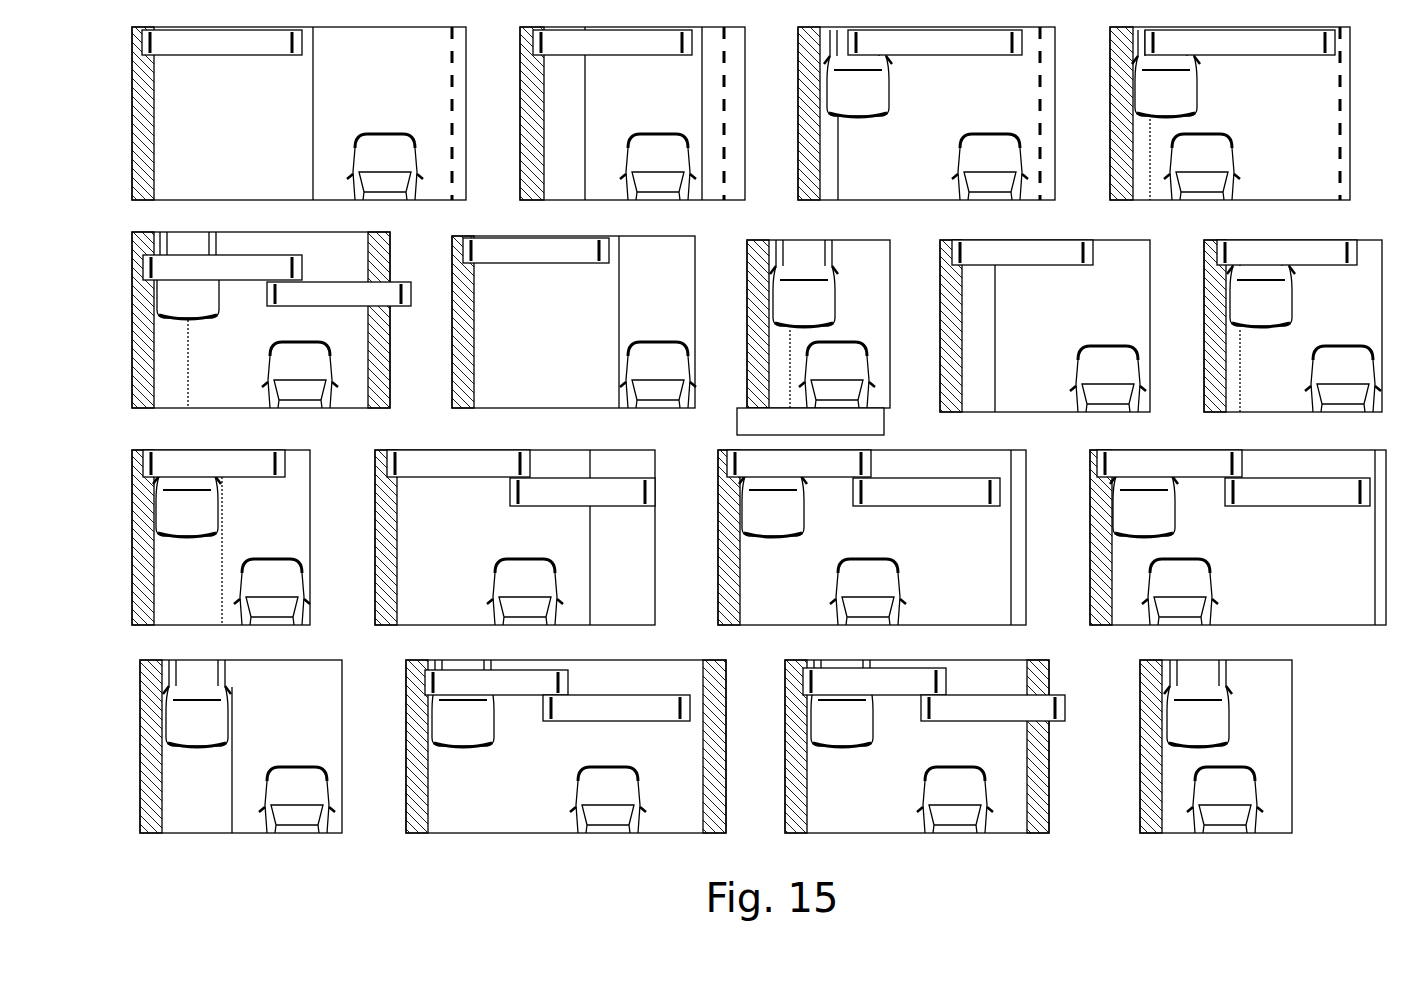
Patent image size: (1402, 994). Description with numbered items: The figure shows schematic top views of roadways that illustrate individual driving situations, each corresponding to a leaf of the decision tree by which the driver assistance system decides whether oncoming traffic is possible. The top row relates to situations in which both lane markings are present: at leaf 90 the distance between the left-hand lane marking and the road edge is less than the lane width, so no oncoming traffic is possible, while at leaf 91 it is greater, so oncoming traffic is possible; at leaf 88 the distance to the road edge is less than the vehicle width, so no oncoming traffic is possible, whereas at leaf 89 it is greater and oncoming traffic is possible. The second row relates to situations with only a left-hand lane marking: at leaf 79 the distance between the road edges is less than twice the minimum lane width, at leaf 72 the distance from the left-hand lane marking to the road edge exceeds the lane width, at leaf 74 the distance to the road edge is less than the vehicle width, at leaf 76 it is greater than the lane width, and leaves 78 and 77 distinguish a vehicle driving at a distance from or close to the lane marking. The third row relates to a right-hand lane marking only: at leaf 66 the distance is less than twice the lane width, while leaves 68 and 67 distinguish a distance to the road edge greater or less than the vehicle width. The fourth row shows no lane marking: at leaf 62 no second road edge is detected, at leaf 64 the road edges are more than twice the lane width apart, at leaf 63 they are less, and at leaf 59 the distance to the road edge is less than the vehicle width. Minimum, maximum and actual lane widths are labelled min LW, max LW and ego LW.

The leaf 91 is at (274, 113).
The leaf 90 is at (608, 113).
The leaf 89 is at (901, 113).
The leaf 88 is at (1206, 113).
The leaf 79 is at (247, 320).
The leaf 72 is at (549, 322).
The leaf 74 is at (795, 337).
The leaf 76 is at (1021, 326).
The leaf 78 is at (1268, 326).
The leaf 77 is at (196, 537).
The leaf 66 is at (490, 537).
The leaf 68 is at (848, 537).
The leaf 67 is at (1213, 537).
The leaf 62 is at (216, 746).
The leaf 64 is at (541, 746).
The leaf 63 is at (901, 746).
The leaf 59 is at (1189, 746).